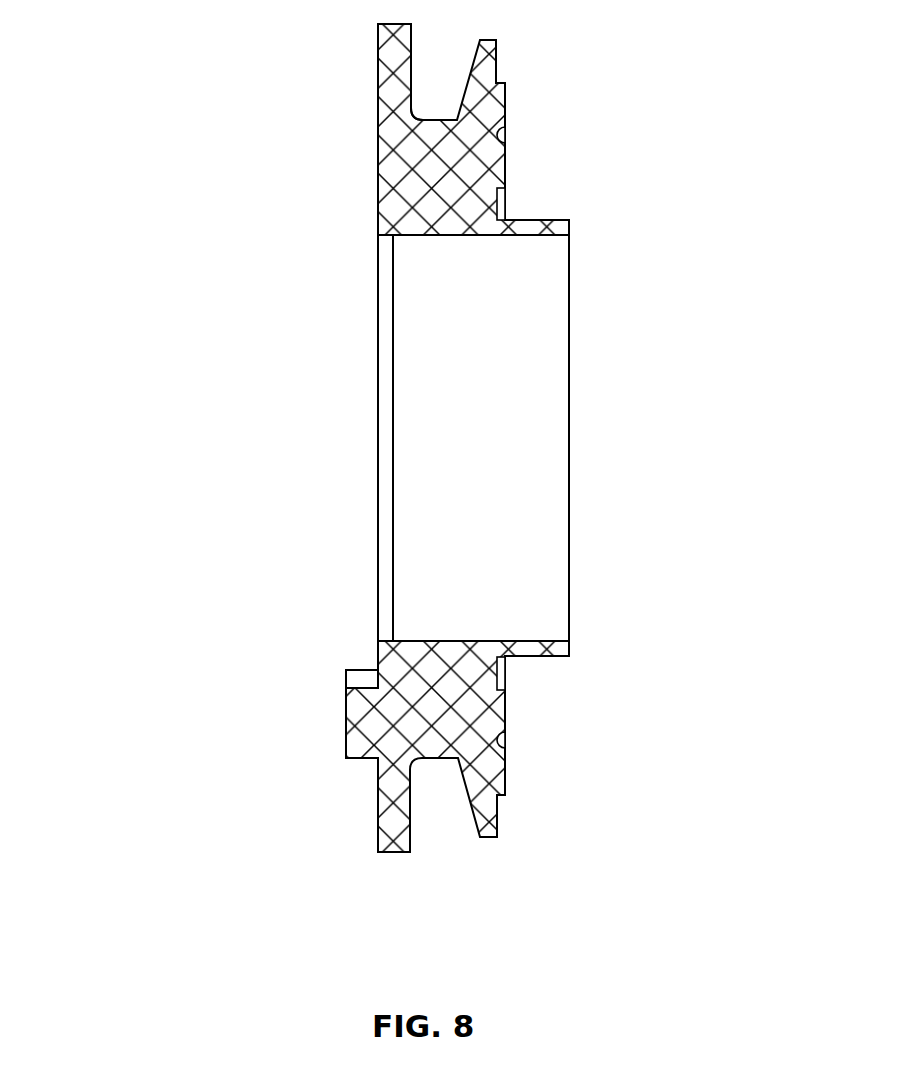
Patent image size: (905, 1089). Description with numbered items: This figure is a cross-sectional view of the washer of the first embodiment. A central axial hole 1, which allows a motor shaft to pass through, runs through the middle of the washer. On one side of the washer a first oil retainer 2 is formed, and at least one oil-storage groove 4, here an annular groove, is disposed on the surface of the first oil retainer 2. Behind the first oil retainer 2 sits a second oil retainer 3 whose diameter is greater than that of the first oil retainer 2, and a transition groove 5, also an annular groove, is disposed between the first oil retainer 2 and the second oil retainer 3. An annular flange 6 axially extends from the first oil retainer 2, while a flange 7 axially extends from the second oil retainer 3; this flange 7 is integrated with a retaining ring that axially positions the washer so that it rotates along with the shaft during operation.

The central axial hole 1 is at (380, 432).
The first oil retainer 2 is at (504, 83).
The second oil retainer 3 is at (378, 68).
The oil-storage groove 4 is at (505, 134).
The transition groove 5 is at (435, 802).
The annular flange 6 is at (531, 237).
The flange 7 is at (360, 715).